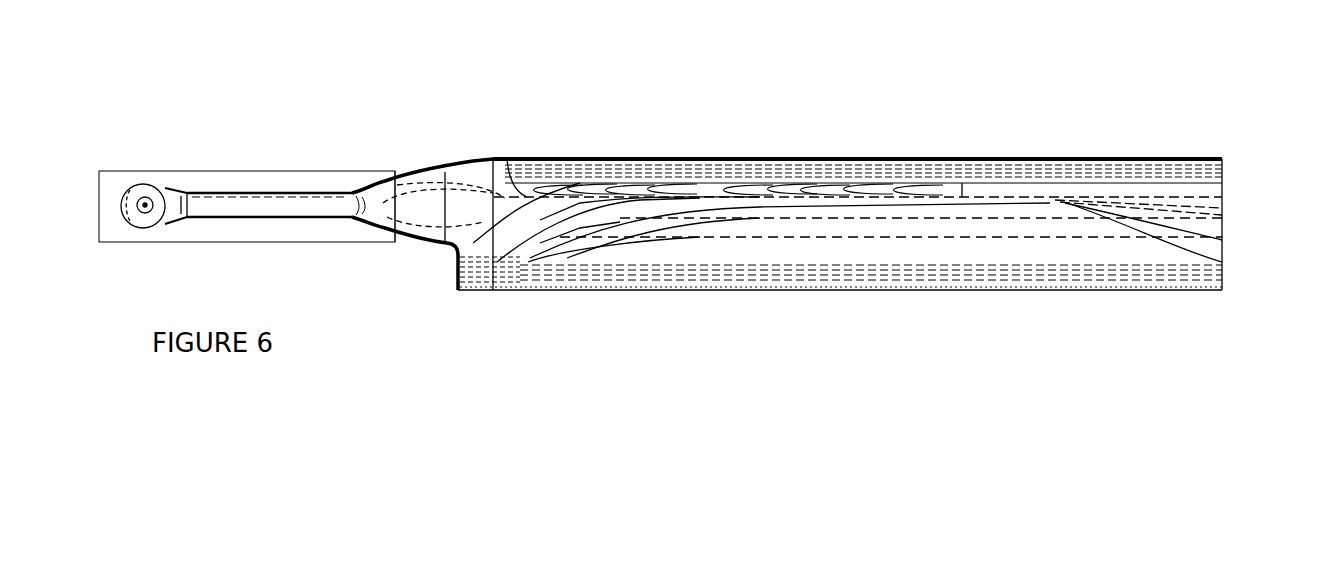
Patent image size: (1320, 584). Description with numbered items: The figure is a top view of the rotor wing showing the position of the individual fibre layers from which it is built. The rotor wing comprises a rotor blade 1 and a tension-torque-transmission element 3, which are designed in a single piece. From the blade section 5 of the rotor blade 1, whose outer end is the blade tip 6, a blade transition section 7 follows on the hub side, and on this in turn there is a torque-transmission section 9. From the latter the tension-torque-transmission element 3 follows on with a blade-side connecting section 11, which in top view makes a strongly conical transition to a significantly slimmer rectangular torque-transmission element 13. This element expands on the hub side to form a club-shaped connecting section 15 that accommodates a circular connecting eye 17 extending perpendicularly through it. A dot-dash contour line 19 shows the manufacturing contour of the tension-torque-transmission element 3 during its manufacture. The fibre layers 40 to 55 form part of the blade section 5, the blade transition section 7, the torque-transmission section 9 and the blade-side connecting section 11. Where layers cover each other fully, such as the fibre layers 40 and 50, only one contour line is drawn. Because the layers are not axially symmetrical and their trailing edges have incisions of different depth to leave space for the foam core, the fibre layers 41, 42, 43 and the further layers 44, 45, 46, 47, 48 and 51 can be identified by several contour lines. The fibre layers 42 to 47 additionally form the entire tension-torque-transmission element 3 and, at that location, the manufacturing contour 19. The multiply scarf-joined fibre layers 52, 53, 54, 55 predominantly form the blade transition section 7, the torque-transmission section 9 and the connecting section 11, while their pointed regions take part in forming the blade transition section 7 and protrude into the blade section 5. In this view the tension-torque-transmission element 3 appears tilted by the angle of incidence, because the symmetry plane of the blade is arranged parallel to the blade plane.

The rotor blade 1 is at (982, 100).
The tension-torque-transmission element 3 is at (310, 163).
The blade section 5 is at (730, 133).
The blade tip 6 is at (1222, 212).
The blade transition section 7 is at (475, 177).
The torque-transmission section 9 is at (428, 192).
The blade-side connecting section 11 is at (382, 200).
The torque-transmission element 13 is at (240, 210).
The club-shaped connecting section 15 is at (157, 192).
The connecting eye 17 is at (143, 209).
The contour line 19 is at (120, 171).
The fibre layer 40 is at (841, 305).
The fibre layer 50 is at (764, 288).
The fibre layer 41 is at (915, 273).
The fibre layer 42 is at (983, 237).
The fibre layer 43 is at (1050, 218).
The fibre layer 44 is at (1082, 208).
The fibre layer 45 is at (1178, 197).
The fibre layer 46 is at (1187, 215).
The fibre layer 47 is at (1168, 217).
The fibre layer 48 is at (885, 193).
The fibre layer 51 is at (953, 265).
The fibre layer 52 is at (628, 228).
The fibre layer 53 is at (577, 228).
The fibre layer 54 is at (543, 195).
The fibre layer 55 is at (522, 247).